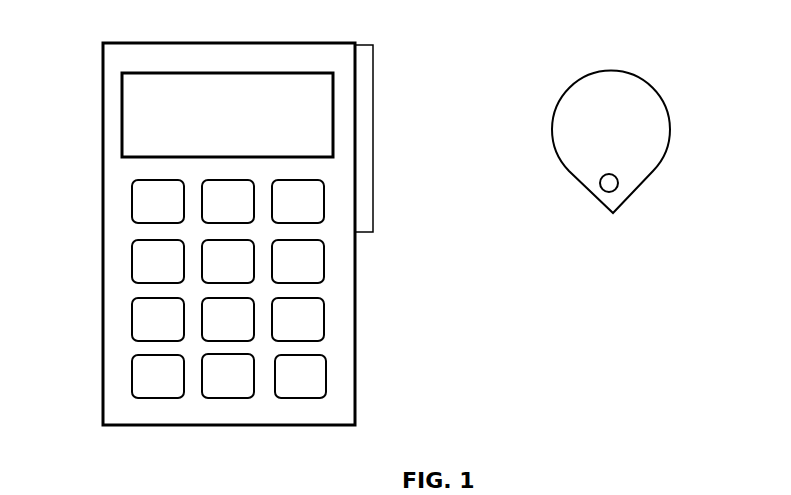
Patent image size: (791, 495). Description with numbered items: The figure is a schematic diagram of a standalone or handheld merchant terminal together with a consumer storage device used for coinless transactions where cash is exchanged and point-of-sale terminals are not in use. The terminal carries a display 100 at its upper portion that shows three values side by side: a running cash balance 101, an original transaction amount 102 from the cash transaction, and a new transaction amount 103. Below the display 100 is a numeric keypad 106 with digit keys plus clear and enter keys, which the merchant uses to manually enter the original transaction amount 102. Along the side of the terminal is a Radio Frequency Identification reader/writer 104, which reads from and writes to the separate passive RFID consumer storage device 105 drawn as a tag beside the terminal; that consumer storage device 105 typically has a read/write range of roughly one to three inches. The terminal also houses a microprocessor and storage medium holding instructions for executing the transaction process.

The display 100 is at (241, 217).
The running cash balance 101 is at (150, 101).
The original transaction amount 102 is at (220, 101).
The new transaction amount 103 is at (290, 101).
The RFID reader/writer 104 is at (367, 143).
The consumer storage device 105 is at (612, 102).
The numeric keypad 106 is at (118, 258).